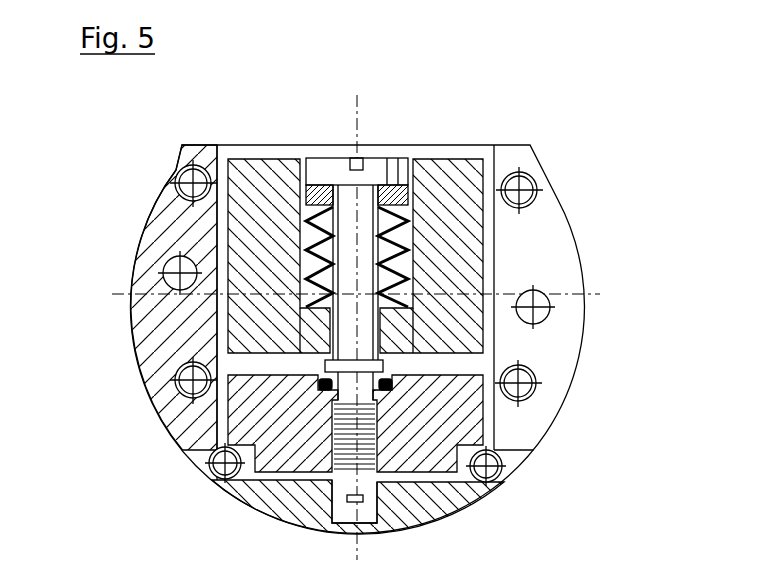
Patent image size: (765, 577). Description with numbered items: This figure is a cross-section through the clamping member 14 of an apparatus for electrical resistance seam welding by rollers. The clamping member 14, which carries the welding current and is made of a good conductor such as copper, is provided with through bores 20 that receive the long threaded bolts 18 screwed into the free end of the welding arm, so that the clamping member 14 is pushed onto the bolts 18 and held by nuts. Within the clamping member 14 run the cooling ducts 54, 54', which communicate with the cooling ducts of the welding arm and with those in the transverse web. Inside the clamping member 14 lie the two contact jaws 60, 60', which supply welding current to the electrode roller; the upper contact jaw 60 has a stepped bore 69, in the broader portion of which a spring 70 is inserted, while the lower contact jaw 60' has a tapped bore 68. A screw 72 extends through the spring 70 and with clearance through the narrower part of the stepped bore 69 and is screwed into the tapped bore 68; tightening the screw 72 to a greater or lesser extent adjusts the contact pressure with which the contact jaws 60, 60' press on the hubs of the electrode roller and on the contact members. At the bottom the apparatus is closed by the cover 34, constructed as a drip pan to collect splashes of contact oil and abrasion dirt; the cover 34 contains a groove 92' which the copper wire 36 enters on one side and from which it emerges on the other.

The clamping member 14 is at (201, 144).
The threaded bolts 18 is at (184, 177).
The through bores 20 is at (172, 190).
The cover 34 is at (255, 490).
The copper wire 36 is at (367, 510).
The cooling duct 54 is at (574, 315).
The cooling duct 54' is at (137, 275).
The upper contact jaw 60 is at (443, 213).
The lower contact jaw 60' is at (414, 455).
The tapped bore 68 is at (332, 446).
The stepped bore 69 is at (405, 212).
The spring 70 is at (304, 208).
The screw head 72 is at (338, 172).
The groove 92' is at (386, 530).